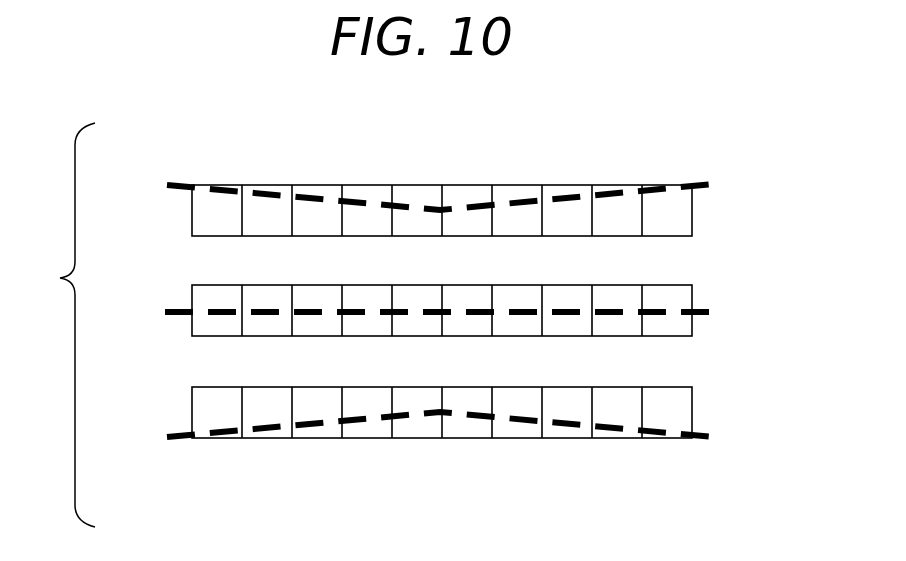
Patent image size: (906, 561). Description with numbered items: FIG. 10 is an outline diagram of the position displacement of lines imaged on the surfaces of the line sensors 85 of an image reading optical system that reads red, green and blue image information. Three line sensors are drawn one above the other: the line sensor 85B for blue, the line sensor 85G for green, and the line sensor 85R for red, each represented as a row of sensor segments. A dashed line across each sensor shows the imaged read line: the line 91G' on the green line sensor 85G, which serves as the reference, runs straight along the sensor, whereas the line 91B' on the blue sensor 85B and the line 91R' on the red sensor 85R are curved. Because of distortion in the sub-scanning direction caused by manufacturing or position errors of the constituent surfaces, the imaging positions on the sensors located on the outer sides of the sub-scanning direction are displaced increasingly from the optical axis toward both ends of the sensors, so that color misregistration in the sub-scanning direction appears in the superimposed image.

The line sensors 85 is at (654, 170).
The line sensor for blue 85B is at (400, 210).
The line sensor for green 85G is at (400, 310).
The line sensor for red 85R is at (400, 412).
The blue light illuminance distribution 91B' is at (440, 161).
The green light illuminance distribution 91G' is at (439, 278).
The red light illuminance distribution 91R' is at (440, 465).